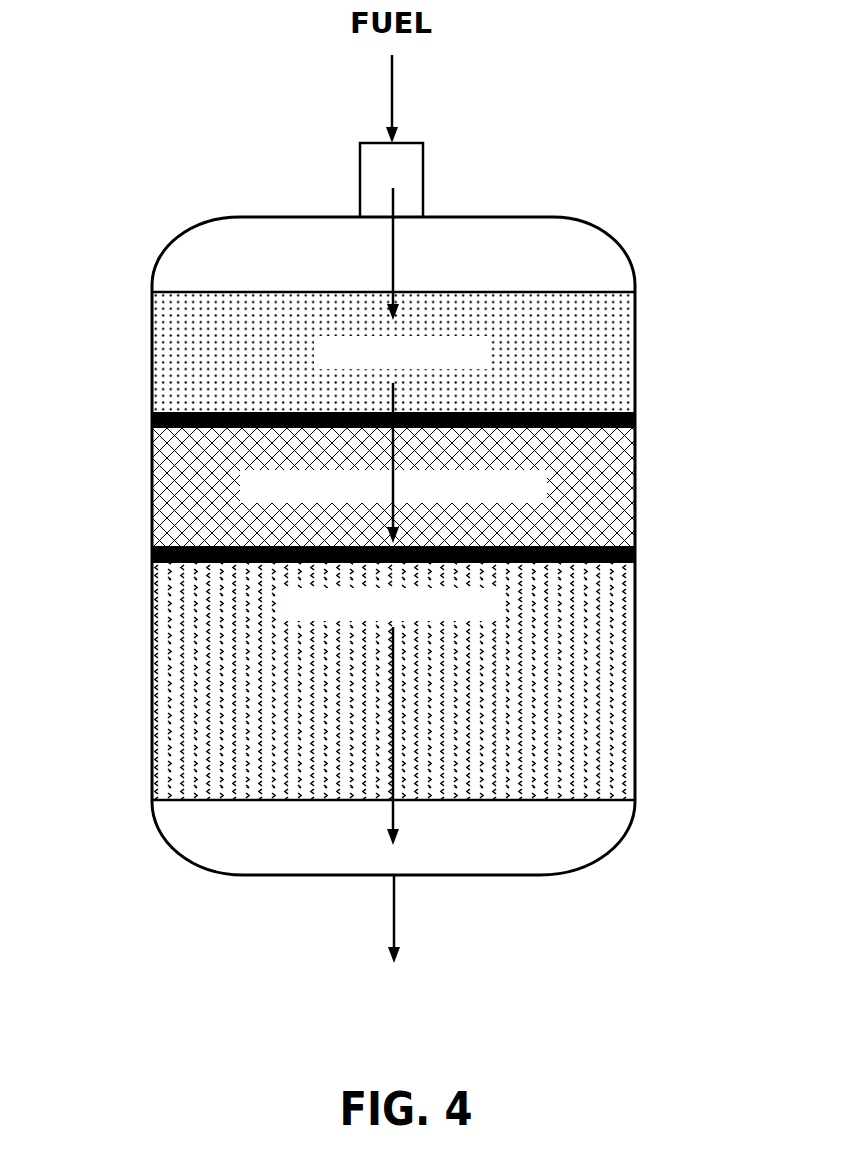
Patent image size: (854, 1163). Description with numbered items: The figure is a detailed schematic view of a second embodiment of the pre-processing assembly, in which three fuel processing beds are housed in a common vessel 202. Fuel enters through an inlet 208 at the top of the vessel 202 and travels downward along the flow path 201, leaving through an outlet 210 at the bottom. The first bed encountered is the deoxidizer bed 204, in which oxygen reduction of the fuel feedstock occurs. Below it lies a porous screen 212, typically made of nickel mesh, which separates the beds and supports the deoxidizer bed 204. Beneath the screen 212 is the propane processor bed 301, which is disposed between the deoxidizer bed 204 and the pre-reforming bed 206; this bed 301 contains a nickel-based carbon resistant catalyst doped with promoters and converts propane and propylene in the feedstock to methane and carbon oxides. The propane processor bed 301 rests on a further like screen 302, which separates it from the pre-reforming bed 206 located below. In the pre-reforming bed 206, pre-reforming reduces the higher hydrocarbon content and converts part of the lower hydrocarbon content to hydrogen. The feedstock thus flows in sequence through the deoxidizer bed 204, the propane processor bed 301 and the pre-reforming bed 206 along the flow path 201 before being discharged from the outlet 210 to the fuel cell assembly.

The flow path 201 is at (389, 97).
The vessel 202 is at (607, 258).
The deoxidizer bed 204 is at (175, 365).
The pre-reforming bed 206 is at (608, 680).
The inlet 208 is at (412, 181).
The outlet 210 is at (392, 877).
The screen 212 is at (152, 433).
The propane processor bed 301 is at (620, 500).
The further screen 302 is at (152, 563).